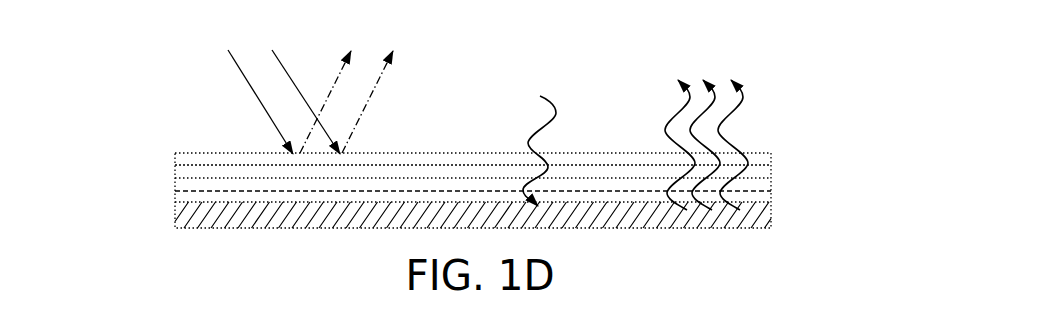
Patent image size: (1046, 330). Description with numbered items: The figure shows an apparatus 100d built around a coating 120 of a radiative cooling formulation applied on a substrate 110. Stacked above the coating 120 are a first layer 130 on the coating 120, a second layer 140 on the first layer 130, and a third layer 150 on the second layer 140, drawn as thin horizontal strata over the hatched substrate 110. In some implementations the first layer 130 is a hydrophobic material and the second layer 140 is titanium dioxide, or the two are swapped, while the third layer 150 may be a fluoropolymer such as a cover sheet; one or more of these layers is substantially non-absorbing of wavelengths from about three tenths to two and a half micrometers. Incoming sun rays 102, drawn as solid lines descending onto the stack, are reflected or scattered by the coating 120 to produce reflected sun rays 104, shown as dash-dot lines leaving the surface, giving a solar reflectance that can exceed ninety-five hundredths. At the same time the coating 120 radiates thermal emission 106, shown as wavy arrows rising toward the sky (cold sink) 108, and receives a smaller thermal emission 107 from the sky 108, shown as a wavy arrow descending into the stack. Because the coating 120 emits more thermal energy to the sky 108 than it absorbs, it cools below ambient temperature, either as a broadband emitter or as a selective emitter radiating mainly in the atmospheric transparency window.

The apparatus 100d is at (158, 100).
The sun rays 102 is at (270, 77).
The reflected sun rays 104 is at (365, 77).
The thermal emission 106 is at (776, 122).
The thermal emission 107 is at (561, 112).
The sky (cold sink) 108 is at (685, 75).
The substrate 110 is at (175, 218).
The coating 120 is at (772, 198).
The first layer 130 is at (177, 183).
The second layer 140 is at (808, 142).
The third layer 150 is at (178, 153).